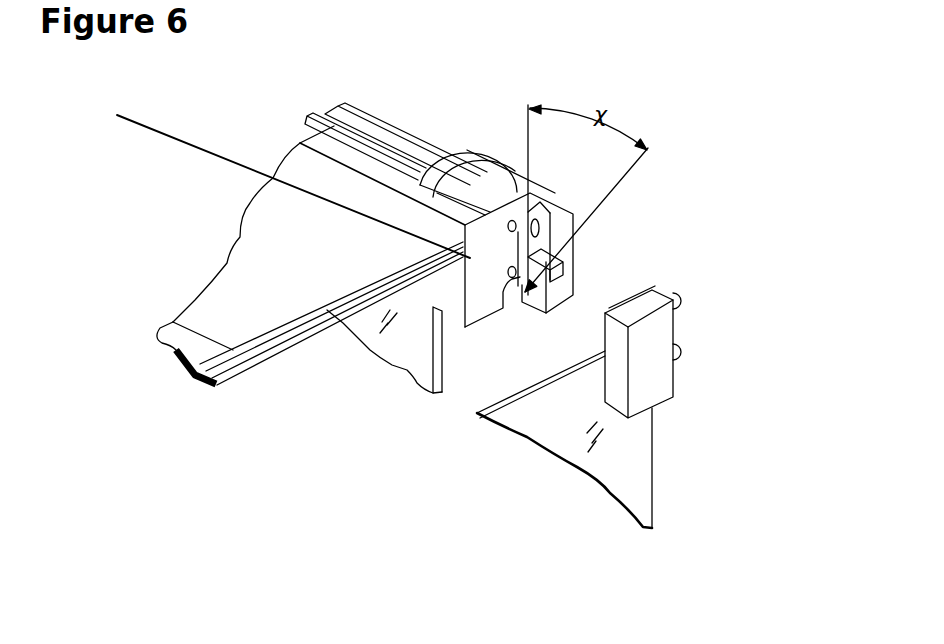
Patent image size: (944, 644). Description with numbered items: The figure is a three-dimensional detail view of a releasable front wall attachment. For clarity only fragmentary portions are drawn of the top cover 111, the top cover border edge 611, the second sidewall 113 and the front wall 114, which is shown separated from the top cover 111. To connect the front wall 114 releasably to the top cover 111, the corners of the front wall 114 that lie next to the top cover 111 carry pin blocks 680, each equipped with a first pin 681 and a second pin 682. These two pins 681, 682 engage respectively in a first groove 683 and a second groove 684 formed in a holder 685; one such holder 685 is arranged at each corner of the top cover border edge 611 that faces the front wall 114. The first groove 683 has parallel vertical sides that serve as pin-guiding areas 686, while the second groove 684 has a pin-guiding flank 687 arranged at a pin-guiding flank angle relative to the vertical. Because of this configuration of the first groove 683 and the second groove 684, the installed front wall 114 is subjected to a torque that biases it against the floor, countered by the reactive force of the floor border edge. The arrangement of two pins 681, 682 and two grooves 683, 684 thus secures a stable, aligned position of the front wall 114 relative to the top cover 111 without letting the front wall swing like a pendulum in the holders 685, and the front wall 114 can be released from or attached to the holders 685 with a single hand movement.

The top cover 111 is at (302, 240).
The second sidewall 113 is at (400, 352).
The front wall 114 is at (627, 442).
The top cover border edge 611 is at (410, 290).
The pin block 680 is at (660, 378).
The first pin 681 is at (684, 298).
The second pin 682 is at (685, 352).
The first groove 683 is at (556, 208).
The second groove 684 is at (558, 270).
The holder 685 is at (557, 237).
The pin-guiding areas 686 is at (538, 226).
The pin-guiding flank 687 is at (274, 178).